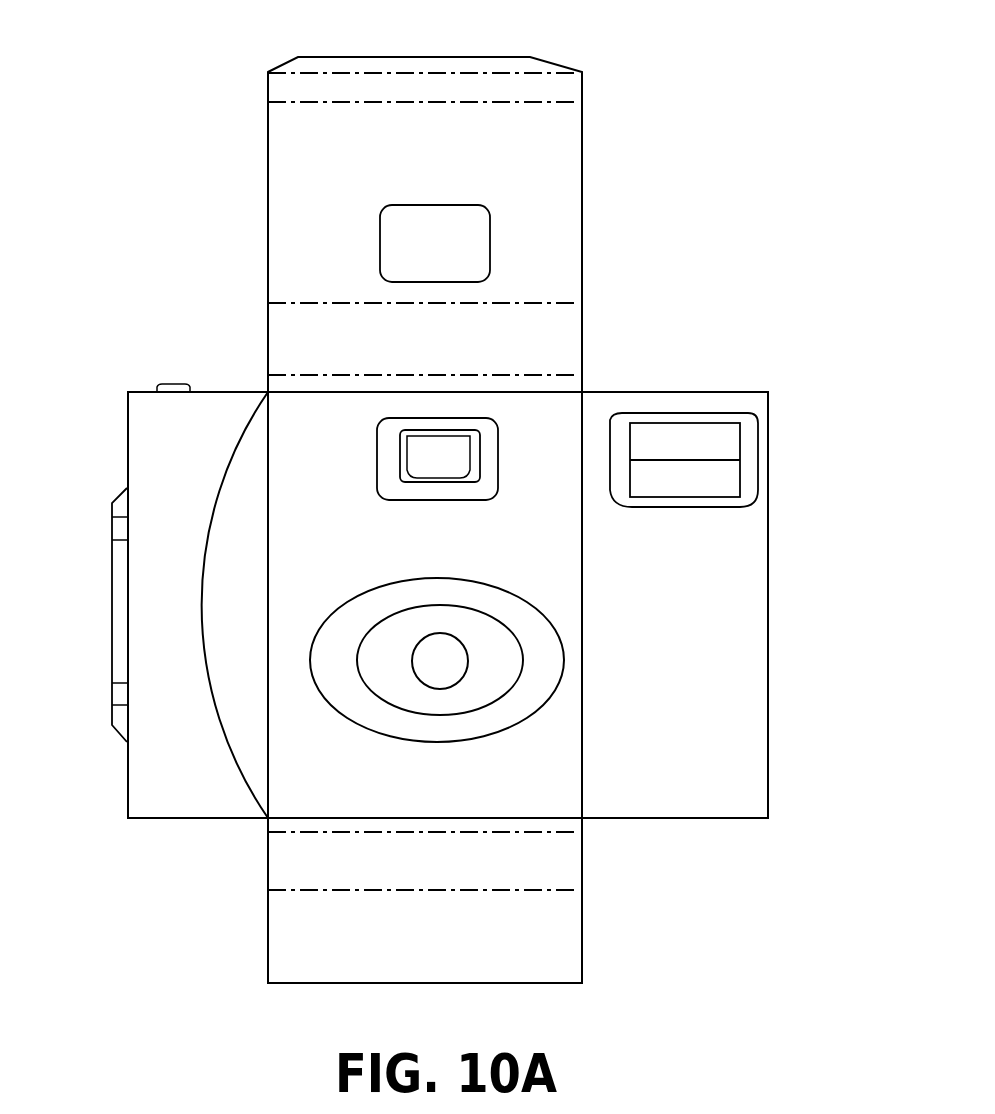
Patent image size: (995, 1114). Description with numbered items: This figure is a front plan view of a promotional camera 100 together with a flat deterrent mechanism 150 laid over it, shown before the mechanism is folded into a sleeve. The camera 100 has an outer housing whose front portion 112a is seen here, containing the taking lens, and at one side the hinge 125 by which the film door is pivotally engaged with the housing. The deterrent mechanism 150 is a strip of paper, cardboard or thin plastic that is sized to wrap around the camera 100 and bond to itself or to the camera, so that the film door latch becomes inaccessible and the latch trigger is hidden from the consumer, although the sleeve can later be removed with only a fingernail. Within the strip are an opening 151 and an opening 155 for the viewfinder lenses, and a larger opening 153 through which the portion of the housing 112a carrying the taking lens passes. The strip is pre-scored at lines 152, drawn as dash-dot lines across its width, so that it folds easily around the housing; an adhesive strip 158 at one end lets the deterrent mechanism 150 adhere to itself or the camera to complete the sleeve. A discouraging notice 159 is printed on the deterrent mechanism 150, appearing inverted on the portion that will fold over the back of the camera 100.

The promotional camera 100 is at (768, 451).
The front portion 112a is at (684, 517).
The hinge 125 is at (112, 627).
The deterrent mechanism 150 is at (583, 235).
The opening 151 is at (484, 480).
The lines 152 is at (282, 303).
The opening 153 is at (550, 690).
The opening 155 is at (467, 247).
The adhesive strip 158 is at (552, 83).
The discouraging notice 159 is at (307, 130).